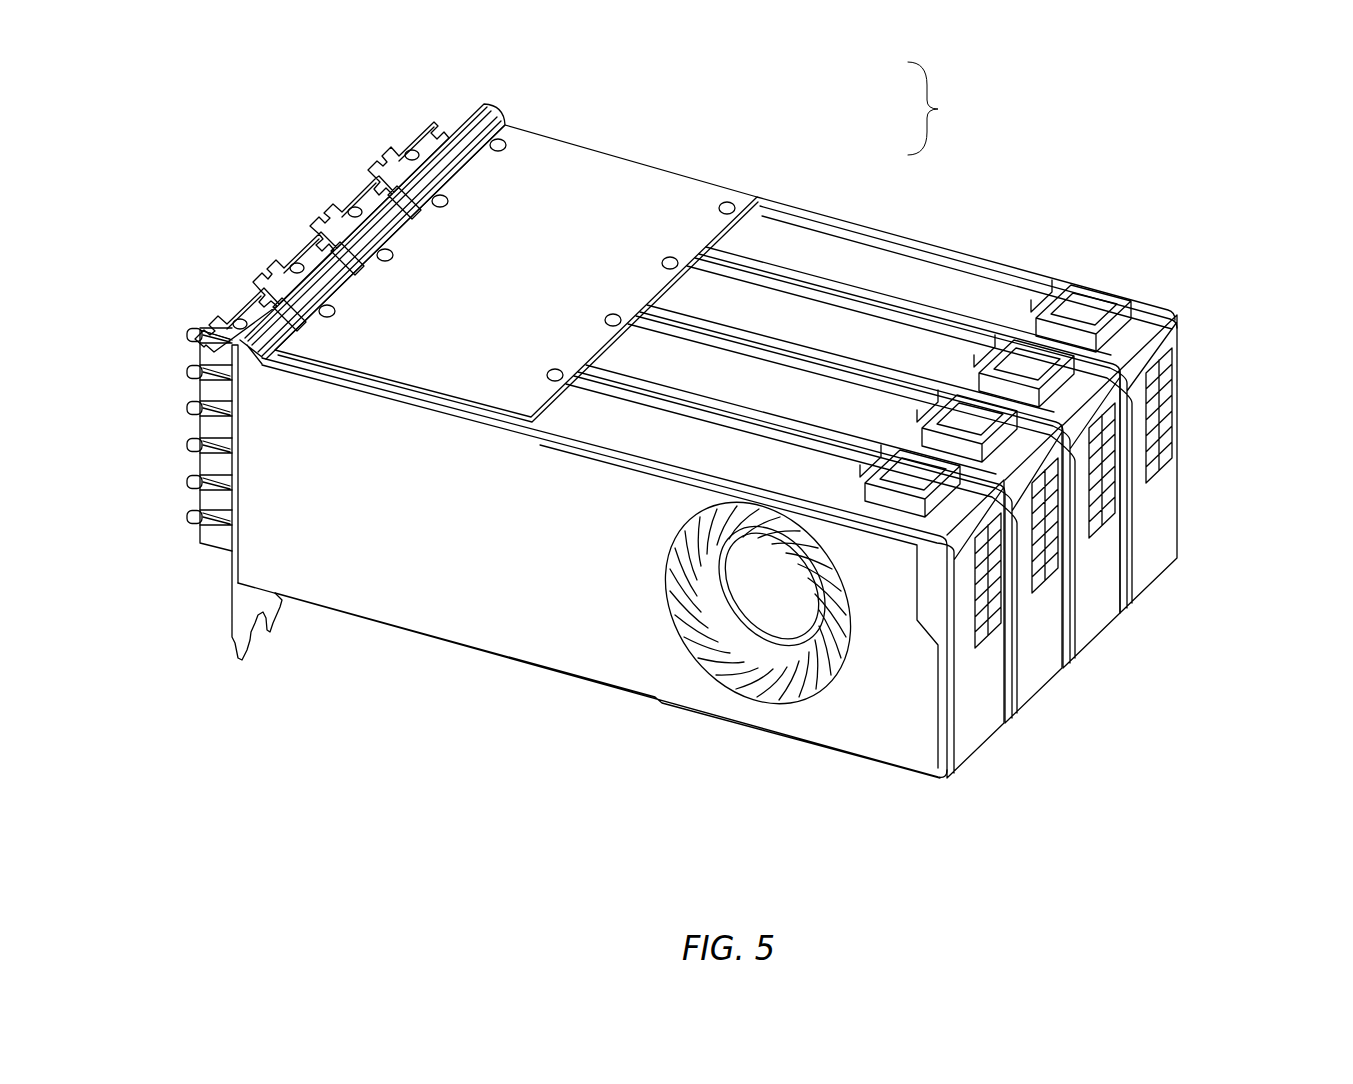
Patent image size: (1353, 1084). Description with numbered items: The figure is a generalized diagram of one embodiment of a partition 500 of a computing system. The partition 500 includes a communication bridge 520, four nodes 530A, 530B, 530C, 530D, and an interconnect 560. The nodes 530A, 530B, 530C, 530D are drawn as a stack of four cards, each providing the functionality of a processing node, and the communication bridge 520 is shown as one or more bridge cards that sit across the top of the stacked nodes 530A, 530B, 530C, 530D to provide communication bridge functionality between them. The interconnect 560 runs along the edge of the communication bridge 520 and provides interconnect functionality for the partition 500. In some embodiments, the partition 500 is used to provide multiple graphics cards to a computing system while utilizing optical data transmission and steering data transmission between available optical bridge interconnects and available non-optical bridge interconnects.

The partition 500 is at (1258, 68).
The communication bridge 520 is at (560, 182).
The node 530A is at (968, 765).
The node 530B is at (1037, 697).
The node 530C is at (1090, 643).
The node 530D is at (1143, 595).
The interconnect 560 is at (287, 258).